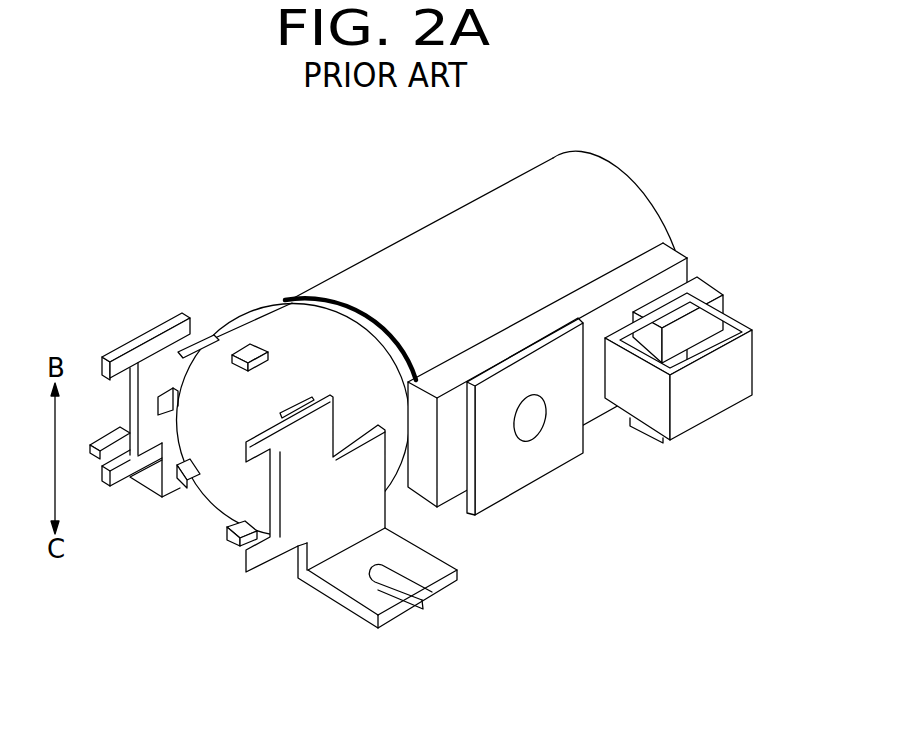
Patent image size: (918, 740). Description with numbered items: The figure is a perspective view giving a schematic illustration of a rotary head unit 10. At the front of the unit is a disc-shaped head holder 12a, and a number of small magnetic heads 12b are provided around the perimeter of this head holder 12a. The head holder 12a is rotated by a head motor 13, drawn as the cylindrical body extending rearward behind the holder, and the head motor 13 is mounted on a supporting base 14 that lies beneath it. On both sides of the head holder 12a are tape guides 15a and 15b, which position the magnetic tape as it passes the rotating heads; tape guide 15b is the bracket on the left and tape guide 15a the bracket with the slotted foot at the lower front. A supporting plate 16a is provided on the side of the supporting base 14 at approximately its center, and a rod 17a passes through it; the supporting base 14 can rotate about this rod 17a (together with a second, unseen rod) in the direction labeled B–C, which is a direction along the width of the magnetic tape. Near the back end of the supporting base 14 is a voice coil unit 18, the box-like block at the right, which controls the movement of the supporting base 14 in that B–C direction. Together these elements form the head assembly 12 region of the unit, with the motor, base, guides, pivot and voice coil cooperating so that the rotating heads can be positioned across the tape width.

The rotary head unit 10 is at (393, 199).
The end plate / bearing holder 12 is at (297, 379).
The head holder 12a is at (288, 323).
The magnetic heads 12b is at (238, 347).
The head motor 13 is at (531, 200).
The supporting base 14 is at (422, 488).
The tape guide 15a is at (292, 530).
The tape guide 15b is at (148, 357).
The supporting plate 16a is at (539, 438).
The rod 17a is at (527, 425).
The voice coil unit 18 is at (717, 426).